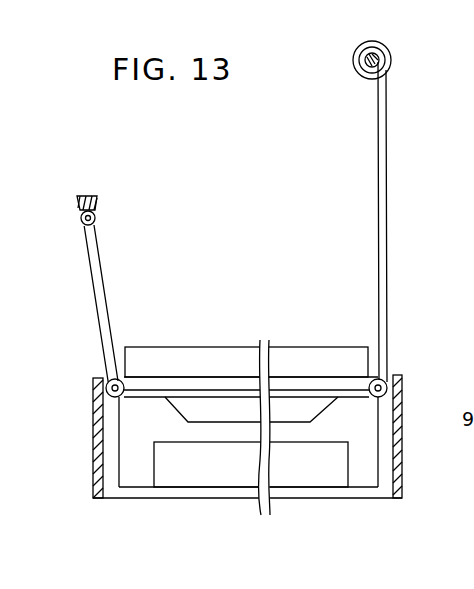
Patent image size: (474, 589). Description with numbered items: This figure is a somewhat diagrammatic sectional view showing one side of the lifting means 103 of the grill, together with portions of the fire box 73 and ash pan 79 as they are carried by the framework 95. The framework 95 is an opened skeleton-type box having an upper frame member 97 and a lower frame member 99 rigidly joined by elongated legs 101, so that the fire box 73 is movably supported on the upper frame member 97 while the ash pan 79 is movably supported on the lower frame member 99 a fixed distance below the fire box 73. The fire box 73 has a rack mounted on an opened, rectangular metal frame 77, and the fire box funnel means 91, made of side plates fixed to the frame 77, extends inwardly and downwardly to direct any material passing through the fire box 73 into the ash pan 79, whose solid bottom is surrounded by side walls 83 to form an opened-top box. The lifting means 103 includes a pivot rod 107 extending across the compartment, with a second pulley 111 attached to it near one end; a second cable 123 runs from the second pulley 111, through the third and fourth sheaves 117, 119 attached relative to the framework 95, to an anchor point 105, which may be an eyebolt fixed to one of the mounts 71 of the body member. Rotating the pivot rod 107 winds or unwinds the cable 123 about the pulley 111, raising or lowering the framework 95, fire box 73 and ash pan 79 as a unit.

The mount 71 is at (95, 200).
The fire box 73 is at (312, 334).
The rectangular metal frame 77 is at (227, 362).
The ash pan 79 is at (168, 433).
The side wall 83 is at (287, 475).
The fire box funnel means 91 is at (161, 412).
The framework 95 is at (125, 507).
The upper frame member 97 is at (288, 380).
The lower frame member 99 is at (200, 493).
The leg 101 is at (110, 462).
The lifting means 103 is at (349, 37).
The anchor point 105 is at (96, 216).
The pivot rod 107 is at (379, 56).
The second pulley 111 is at (400, 77).
The third sheave 117 is at (117, 378).
The fourth sheave 119 is at (382, 378).
The second cable 123 is at (378, 162).